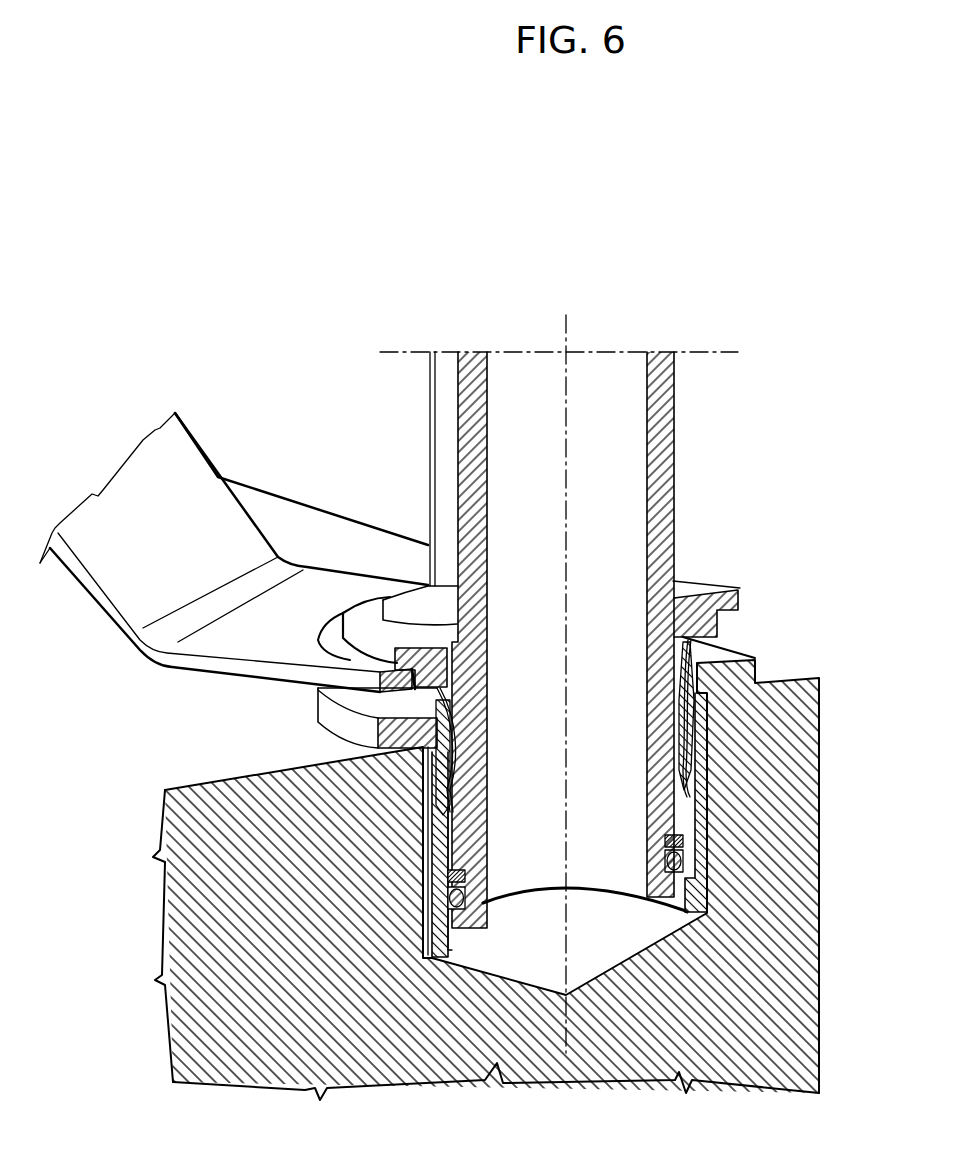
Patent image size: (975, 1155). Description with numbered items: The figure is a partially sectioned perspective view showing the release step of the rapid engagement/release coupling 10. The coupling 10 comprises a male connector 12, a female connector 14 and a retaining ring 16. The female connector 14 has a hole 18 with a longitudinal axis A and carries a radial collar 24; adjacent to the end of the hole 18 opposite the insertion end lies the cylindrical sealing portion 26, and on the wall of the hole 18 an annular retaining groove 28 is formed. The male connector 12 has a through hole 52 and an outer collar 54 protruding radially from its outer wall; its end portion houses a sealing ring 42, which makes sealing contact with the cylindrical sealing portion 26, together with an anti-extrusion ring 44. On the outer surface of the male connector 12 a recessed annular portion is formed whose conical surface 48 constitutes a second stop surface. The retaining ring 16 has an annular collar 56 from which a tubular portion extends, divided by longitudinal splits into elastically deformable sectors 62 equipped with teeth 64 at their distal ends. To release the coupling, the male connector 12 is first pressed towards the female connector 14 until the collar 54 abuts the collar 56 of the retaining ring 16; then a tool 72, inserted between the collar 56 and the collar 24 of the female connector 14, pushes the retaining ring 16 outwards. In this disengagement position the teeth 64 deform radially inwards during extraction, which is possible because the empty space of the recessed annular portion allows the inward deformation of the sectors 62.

The rapid engagement/release coupling 10 is at (347, 383).
The male connector 12 is at (688, 459).
The female connector 14 is at (766, 679).
The retaining ring 16 is at (757, 594).
The hole 18 is at (452, 940).
The radial collar 24 is at (362, 707).
The cylindrical sealing portion 26 is at (683, 905).
The annular retaining groove 28 is at (440, 838).
The sealing ring 42 is at (466, 895).
The anti-extrusion ring 44 is at (466, 876).
The second stop surface 48 is at (668, 798).
The through hole 52 is at (488, 474).
The outer collar 54 is at (407, 606).
The annular collar 56 is at (362, 620).
The elastically deformable sectors 62 is at (449, 748).
The teeth 64 is at (449, 803).
The tool 72 is at (177, 492).
The longitudinal axis A is at (566, 322).